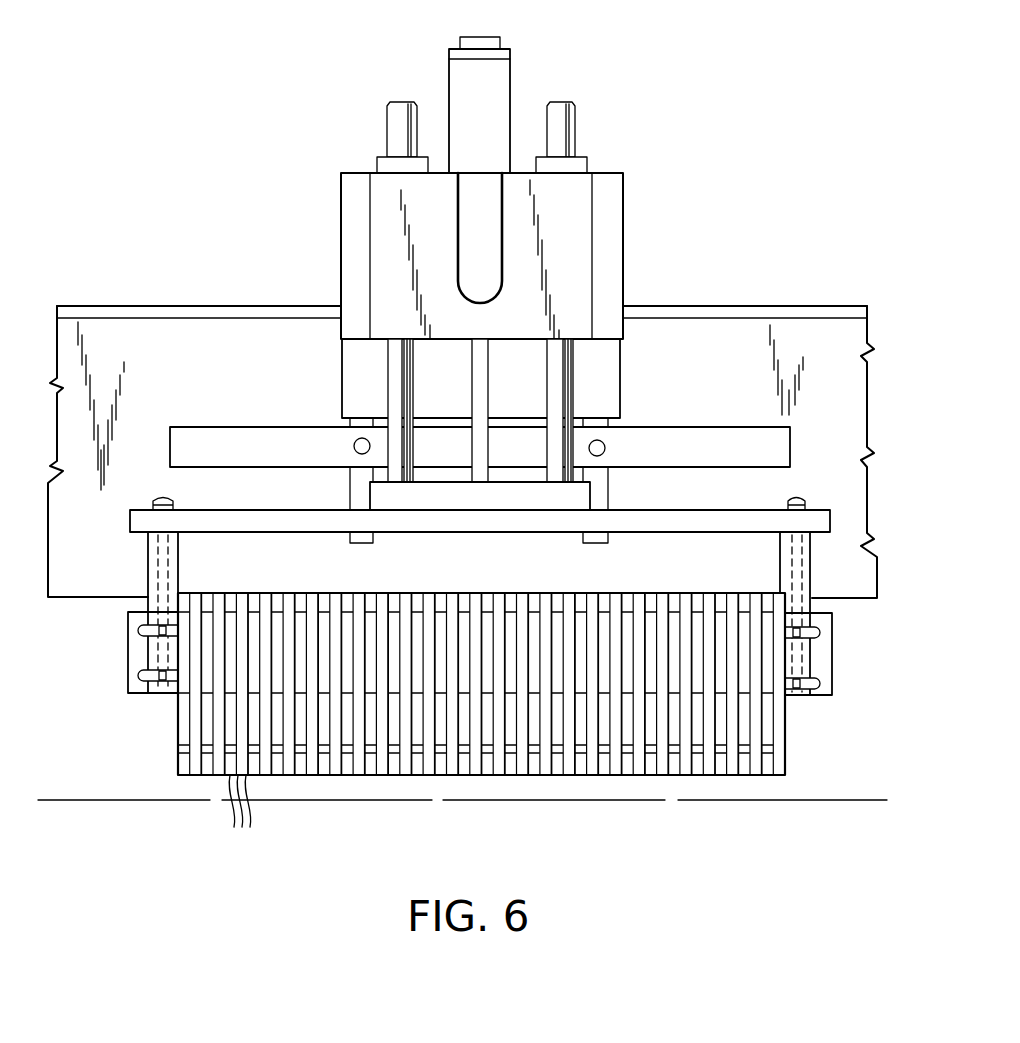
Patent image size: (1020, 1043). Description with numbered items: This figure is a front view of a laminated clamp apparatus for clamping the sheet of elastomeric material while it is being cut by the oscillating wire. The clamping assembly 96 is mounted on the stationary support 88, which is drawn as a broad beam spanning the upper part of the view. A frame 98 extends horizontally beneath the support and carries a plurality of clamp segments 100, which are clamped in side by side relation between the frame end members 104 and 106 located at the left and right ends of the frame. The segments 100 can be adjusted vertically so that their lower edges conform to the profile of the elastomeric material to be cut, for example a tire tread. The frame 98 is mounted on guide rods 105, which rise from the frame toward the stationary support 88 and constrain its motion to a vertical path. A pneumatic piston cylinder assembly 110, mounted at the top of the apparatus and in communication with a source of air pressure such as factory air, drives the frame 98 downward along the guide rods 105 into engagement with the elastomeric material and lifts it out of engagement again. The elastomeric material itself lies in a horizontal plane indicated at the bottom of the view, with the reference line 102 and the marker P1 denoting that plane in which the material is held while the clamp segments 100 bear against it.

The stationary support 88 is at (722, 338).
The pneumatic piston cylinder assembly 110 is at (500, 89).
The guide rods 105 is at (400, 367).
The frame 98 is at (713, 525).
The frame end member 104 is at (162, 650).
The frame end member 106 is at (805, 658).
The clamping assembly 96 is at (173, 757).
The clamp segments 100 is at (248, 817).
The ground line 102 is at (725, 777).
The point P1 is at (803, 799).